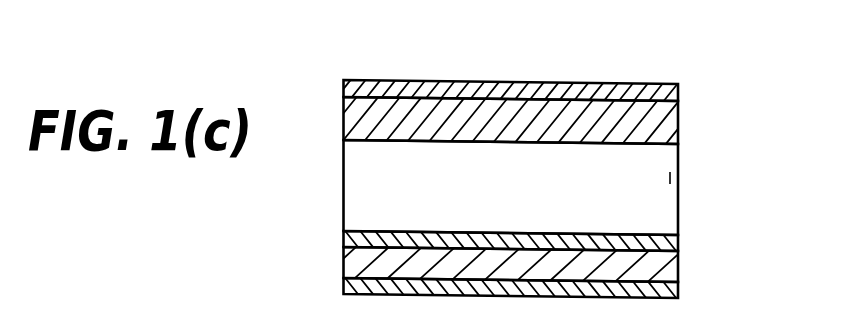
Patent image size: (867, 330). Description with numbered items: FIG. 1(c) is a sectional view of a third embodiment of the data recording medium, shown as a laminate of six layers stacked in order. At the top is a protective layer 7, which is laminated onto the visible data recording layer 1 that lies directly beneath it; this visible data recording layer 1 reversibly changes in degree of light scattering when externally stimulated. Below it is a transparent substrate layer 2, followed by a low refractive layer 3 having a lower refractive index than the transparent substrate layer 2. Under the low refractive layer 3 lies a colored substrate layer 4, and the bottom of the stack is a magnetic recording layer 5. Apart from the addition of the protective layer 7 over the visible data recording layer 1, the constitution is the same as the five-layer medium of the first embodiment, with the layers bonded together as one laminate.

The protective layer 7 is at (682, 93).
The visible data recording layer 1 is at (667, 123).
The transparent substrate layer 2 is at (668, 178).
The low refractive layer 3 is at (679, 239).
The colored substrate layer 4 is at (667, 263).
The magnetic recording layer 5 is at (668, 293).